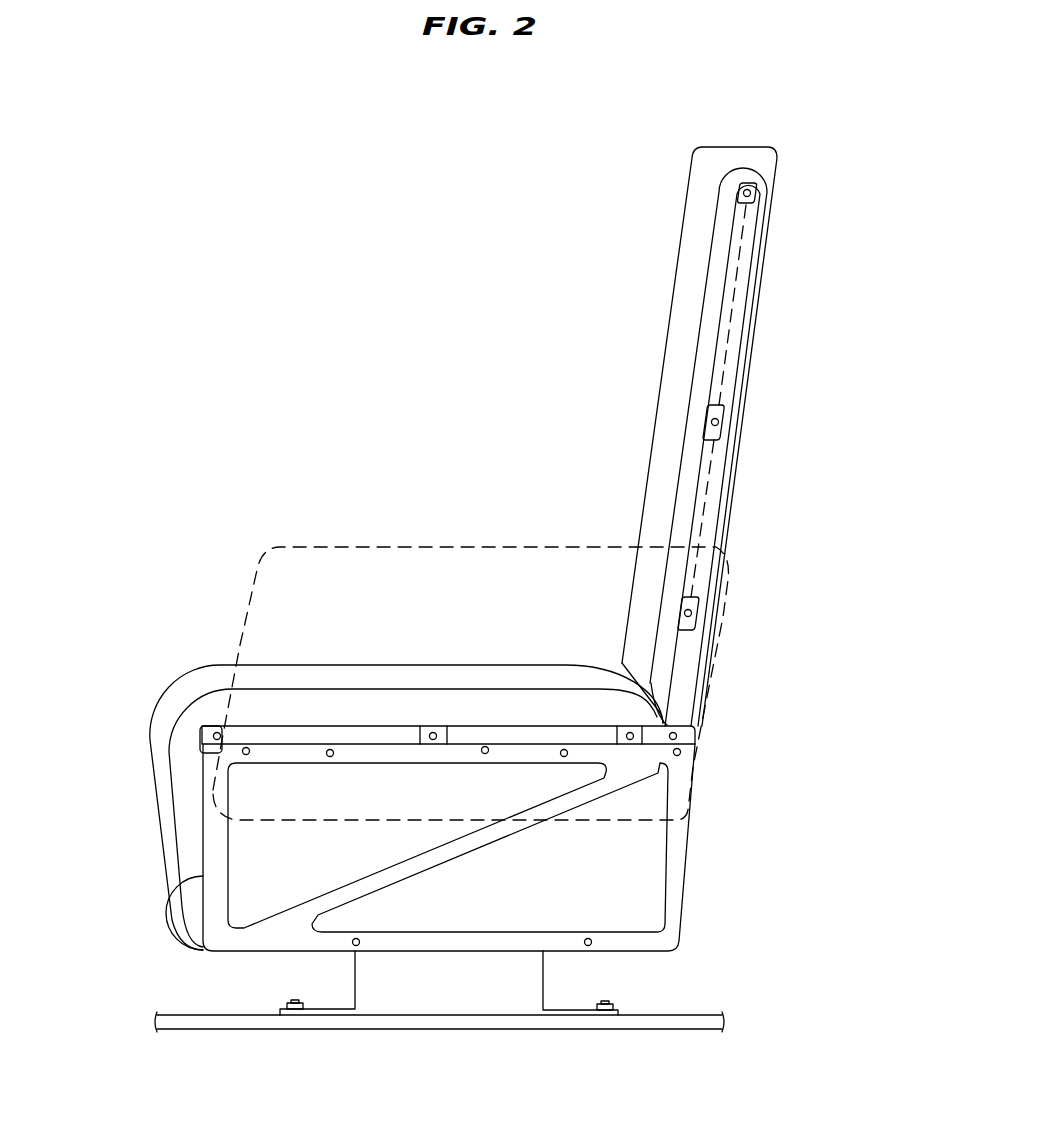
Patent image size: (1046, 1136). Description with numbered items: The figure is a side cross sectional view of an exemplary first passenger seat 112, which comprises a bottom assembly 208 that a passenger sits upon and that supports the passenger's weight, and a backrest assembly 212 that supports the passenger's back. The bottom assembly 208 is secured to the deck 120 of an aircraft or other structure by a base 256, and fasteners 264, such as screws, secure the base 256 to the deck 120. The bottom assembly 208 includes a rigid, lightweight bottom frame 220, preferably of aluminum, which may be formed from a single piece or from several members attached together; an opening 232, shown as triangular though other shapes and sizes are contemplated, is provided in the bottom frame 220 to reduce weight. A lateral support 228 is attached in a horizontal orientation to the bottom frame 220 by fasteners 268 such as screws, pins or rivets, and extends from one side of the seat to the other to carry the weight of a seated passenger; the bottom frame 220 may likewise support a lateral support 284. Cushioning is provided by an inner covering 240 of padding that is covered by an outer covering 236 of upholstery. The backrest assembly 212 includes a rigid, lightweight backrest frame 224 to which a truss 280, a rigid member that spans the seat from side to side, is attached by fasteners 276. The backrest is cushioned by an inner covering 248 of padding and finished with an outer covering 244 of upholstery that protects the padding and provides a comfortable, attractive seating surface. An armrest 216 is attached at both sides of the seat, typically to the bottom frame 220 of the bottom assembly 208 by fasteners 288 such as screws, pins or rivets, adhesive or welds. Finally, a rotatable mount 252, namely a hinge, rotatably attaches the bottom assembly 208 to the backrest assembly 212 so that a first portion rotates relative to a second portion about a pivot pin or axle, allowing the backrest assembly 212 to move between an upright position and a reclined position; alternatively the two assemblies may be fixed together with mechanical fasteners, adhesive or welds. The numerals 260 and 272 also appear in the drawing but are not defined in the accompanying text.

The first passenger seat 112 is at (466, 190).
The deck 120 is at (695, 1015).
The bottom assembly 208 is at (503, 835).
The backrest assembly 212 is at (780, 428).
The armrest 216 is at (355, 545).
The bottom frame 220 is at (175, 935).
The backrest frame 224 is at (725, 293).
The lateral support 228 is at (393, 725).
The opening 232 is at (350, 880).
The outer covering 236 is at (212, 668).
The inner covering 240 is at (547, 690).
The outer covering 244 is at (660, 372).
The inner covering 248 is at (738, 168).
The rotatable mount 252 is at (678, 735).
The base 256 is at (353, 958).
The leg fastener 260 is at (586, 938).
The fastener 264 is at (293, 1002).
The fastener 268 is at (250, 758).
The mounting bracket 272 is at (200, 733).
The fastener 276 is at (748, 200).
The truss 280 is at (755, 250).
The lateral support 284 is at (238, 735).
The fastener 288 is at (348, 740).